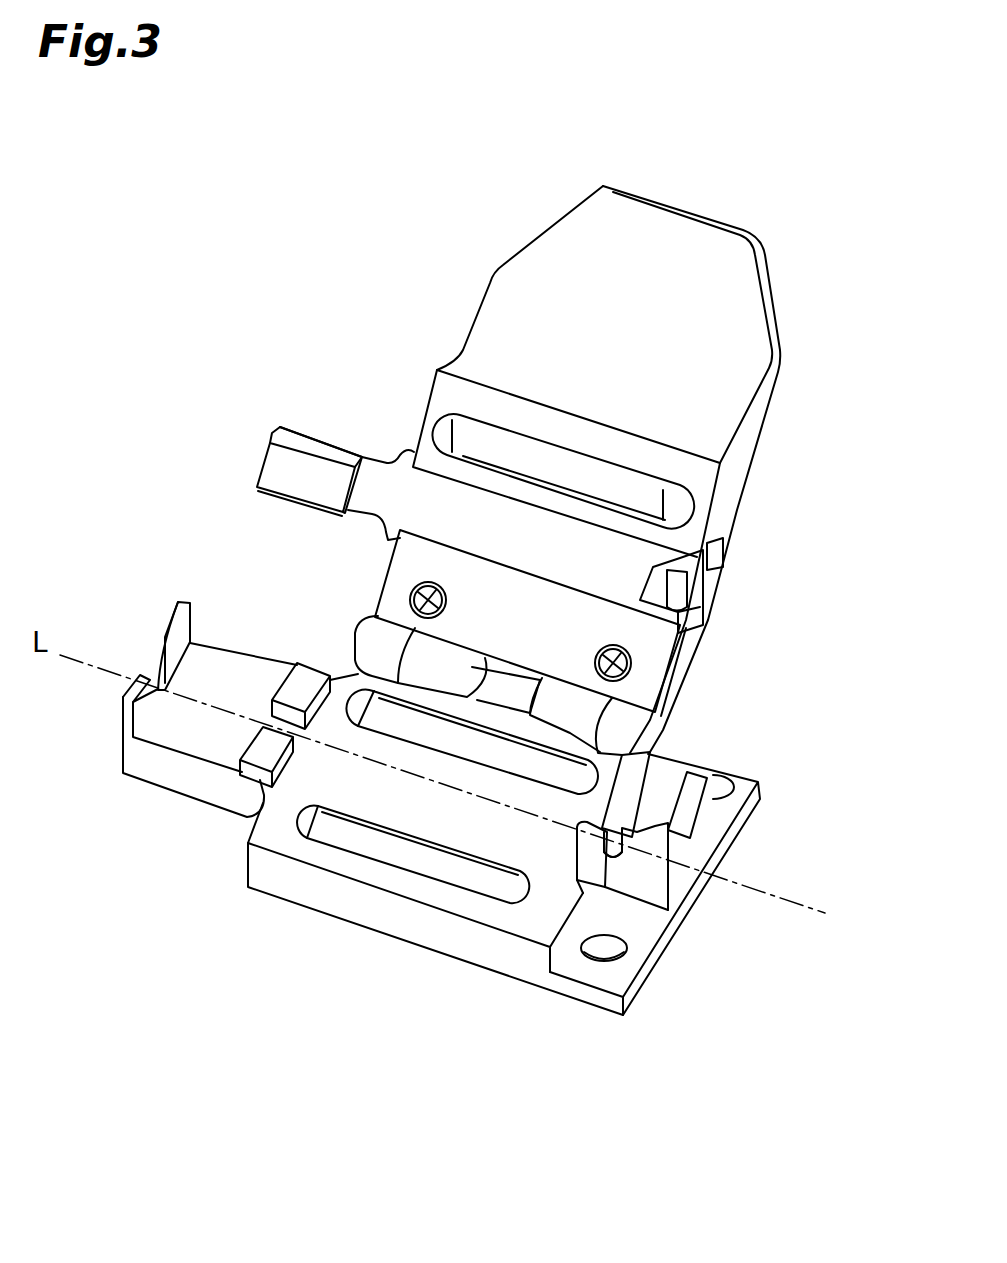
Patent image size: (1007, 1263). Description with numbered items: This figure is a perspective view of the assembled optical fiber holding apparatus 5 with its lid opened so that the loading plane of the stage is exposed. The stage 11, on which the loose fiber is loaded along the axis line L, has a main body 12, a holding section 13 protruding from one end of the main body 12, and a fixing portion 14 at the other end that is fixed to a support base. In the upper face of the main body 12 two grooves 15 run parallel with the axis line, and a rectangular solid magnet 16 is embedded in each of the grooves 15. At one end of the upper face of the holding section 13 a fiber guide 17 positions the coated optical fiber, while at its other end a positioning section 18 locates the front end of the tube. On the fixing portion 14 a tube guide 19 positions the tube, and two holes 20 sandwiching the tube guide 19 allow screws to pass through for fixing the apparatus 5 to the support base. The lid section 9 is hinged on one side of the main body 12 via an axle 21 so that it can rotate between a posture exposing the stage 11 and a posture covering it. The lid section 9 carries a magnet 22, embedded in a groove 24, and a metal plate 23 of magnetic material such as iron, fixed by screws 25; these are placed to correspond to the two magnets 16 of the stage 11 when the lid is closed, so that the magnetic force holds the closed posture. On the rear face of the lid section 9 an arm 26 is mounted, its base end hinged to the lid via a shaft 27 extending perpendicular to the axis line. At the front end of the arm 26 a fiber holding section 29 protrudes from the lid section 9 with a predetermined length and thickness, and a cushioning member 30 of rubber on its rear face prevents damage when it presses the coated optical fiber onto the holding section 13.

The optical fiber holding apparatus 5 is at (722, 66).
The lid section 9 is at (782, 388).
The stage 11 is at (694, 924).
The main body 12 is at (537, 1000).
The holding section 13 is at (228, 897).
The fixing portion 14 is at (628, 1031).
The grooves 15 is at (727, 823).
The magnet 16 is at (703, 830).
The fiber guide 17 is at (163, 647).
The positioning section 18 is at (310, 676).
The tube guide 19 is at (677, 897).
The holes 20 is at (720, 787).
The axle 21 is at (512, 697).
The magnet 22 is at (485, 437).
The metal plate 23 is at (653, 640).
The groove 24 is at (447, 435).
The screws 25 is at (420, 593).
The arm 26 is at (720, 560).
The shaft 27 is at (683, 590).
The fiber holding section 29 is at (302, 440).
The cushioning member 30 is at (272, 460).